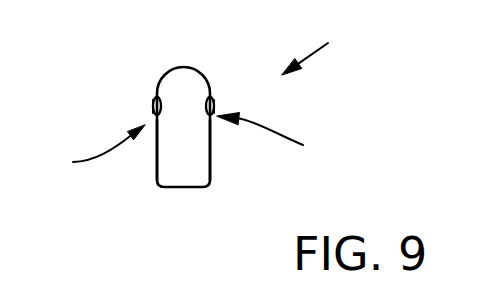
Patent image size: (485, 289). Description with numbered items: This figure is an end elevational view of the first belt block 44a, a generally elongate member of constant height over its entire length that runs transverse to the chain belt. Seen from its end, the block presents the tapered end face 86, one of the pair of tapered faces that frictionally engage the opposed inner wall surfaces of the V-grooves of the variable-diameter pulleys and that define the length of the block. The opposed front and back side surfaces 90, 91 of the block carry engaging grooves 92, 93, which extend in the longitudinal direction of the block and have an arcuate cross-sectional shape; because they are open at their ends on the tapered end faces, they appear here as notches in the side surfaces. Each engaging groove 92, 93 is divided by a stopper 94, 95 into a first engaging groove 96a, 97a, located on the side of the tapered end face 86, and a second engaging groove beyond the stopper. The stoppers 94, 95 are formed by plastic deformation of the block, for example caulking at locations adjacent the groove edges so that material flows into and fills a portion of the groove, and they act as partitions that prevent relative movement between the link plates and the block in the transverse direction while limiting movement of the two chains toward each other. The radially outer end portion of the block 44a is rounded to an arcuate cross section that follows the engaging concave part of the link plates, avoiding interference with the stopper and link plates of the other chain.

The first belt block 44a is at (329, 45).
The tapered end face 86 is at (183, 175).
The front side surface 90 is at (157, 153).
The back side surface 91 is at (210, 162).
The engaging groove 92 is at (91, 154).
The engaging groove 93 is at (277, 136).
The stopper 94 is at (156, 104).
The stopper 95 is at (211, 101).
The first engaging groove 96a is at (211, 105).
The first engaging groove 97a is at (157, 110).